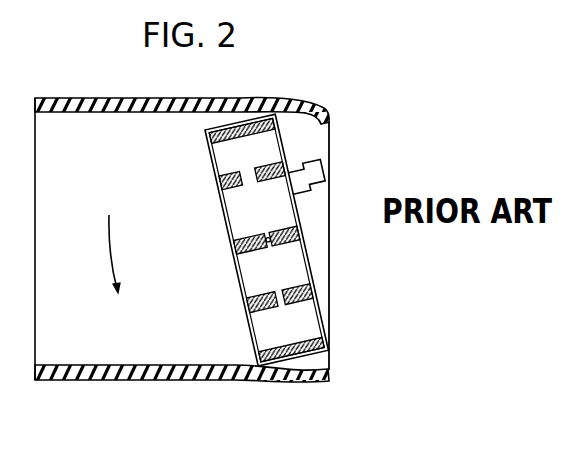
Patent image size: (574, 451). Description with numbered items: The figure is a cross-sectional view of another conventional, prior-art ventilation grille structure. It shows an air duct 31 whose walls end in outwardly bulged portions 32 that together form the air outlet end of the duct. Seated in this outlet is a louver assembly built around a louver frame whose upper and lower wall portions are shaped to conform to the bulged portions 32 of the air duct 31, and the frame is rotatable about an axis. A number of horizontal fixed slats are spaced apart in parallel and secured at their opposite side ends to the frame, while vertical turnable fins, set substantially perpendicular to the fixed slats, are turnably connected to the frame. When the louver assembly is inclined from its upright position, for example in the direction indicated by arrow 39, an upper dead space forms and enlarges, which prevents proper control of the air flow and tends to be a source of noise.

The air duct 31 is at (71, 95).
The outwardly bulged portions 32 is at (291, 98).
The arrow 39 is at (107, 251).